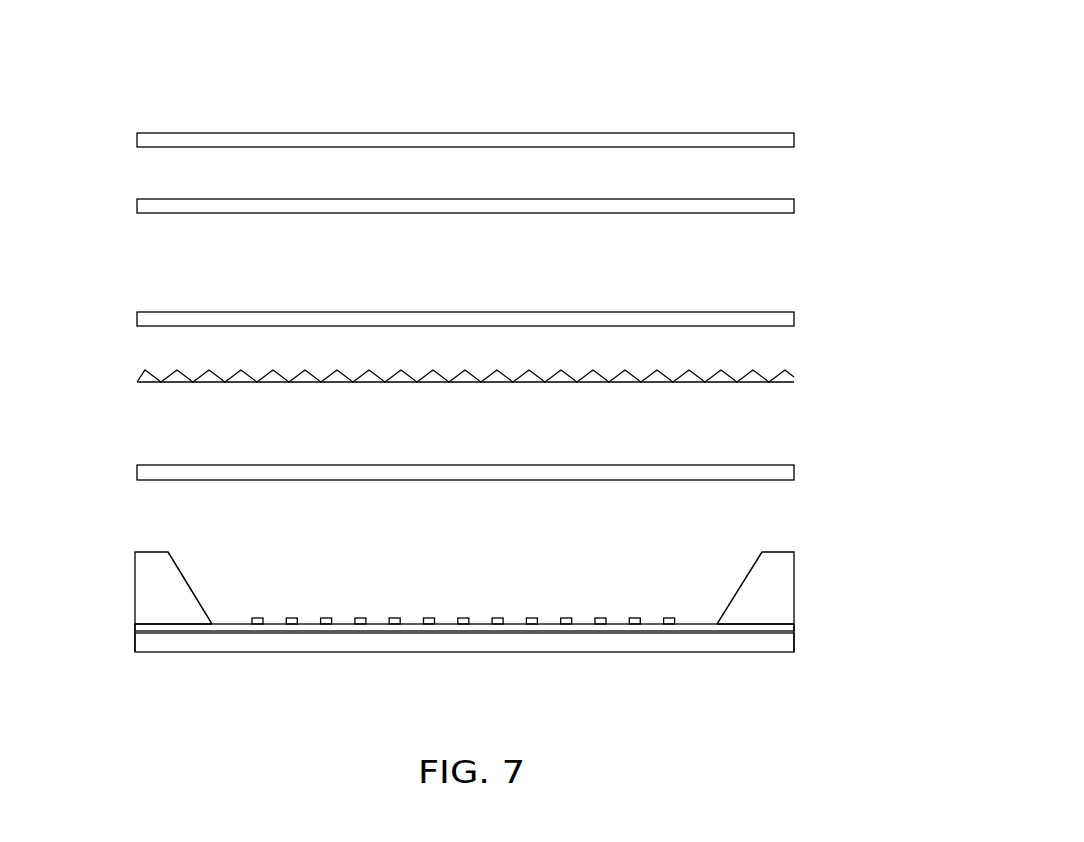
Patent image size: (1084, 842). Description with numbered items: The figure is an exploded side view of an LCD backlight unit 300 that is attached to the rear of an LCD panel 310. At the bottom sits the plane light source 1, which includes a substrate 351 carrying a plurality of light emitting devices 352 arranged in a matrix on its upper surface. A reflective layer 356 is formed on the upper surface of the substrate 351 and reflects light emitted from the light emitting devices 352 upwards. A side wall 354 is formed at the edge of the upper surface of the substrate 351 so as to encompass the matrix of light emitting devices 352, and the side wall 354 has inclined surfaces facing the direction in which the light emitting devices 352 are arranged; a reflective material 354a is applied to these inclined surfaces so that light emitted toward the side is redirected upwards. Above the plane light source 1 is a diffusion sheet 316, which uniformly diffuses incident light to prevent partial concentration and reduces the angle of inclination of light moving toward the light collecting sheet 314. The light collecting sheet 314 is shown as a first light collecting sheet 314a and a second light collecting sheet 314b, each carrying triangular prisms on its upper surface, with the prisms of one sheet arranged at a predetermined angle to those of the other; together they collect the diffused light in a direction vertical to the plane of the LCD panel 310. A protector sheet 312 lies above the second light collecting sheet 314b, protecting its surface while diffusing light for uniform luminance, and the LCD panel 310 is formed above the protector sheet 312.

The LCD backlight unit 300 is at (636, 108).
The LCD panel 310 is at (794, 140).
The protector sheet 312 is at (794, 207).
The light collecting sheet 314 is at (543, 357).
The first light collecting sheet 314a is at (794, 382).
The second light collecting sheet 314b is at (794, 320).
The diffusion sheet 316 is at (794, 472).
The substrate 351 is at (790, 646).
The light emitting devices 352 is at (431, 618).
The side wall 354 is at (142, 591).
The reflective material 354a is at (186, 580).
The reflective layer 356 is at (793, 629).
The plane light source 1 is at (120, 641).